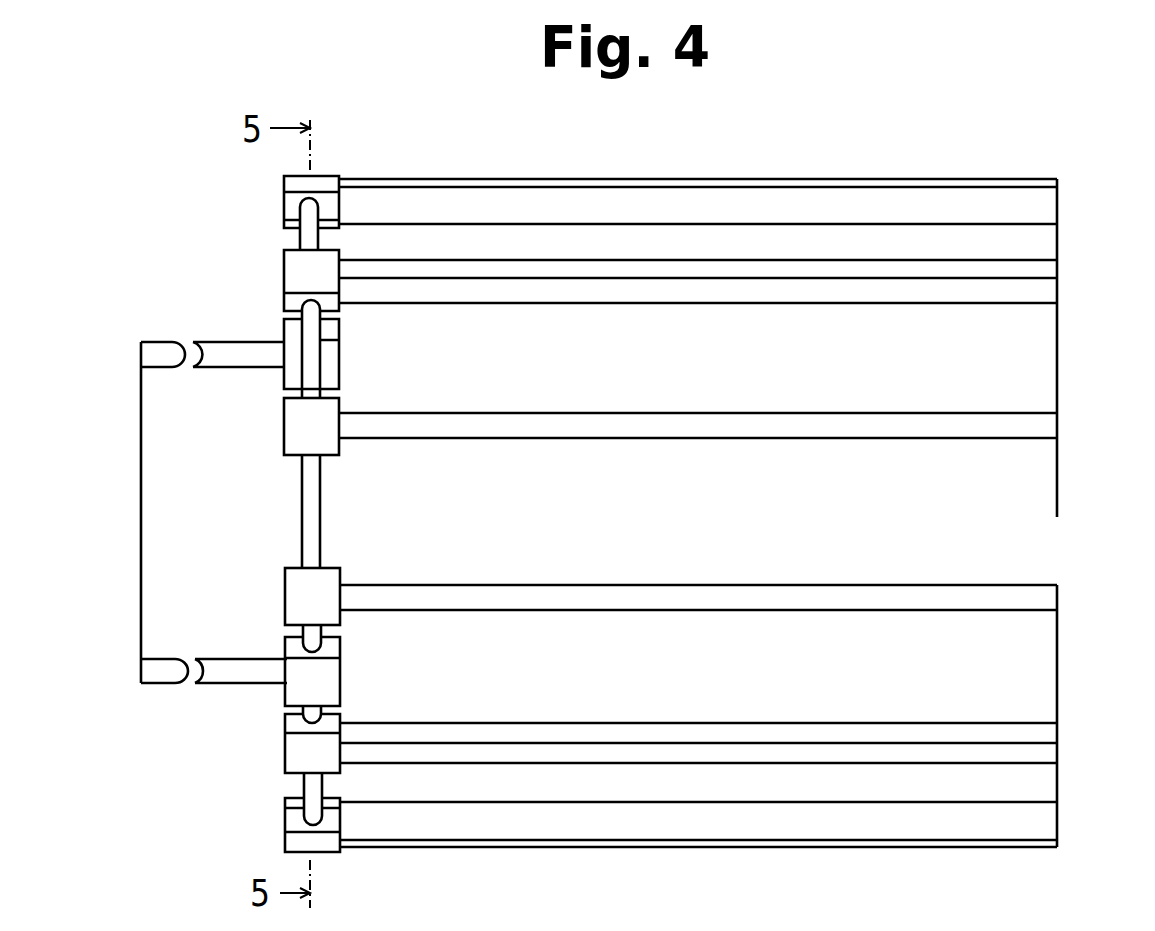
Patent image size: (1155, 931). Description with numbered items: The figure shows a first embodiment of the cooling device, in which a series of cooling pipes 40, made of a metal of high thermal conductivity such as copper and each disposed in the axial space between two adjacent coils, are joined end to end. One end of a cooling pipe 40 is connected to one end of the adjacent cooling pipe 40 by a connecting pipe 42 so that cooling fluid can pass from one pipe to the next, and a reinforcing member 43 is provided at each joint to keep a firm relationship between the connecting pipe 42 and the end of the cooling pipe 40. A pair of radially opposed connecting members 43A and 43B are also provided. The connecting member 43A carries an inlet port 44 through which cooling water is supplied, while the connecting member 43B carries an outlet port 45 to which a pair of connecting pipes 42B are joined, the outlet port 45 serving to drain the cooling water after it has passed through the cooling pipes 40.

The cooling pipe 40 is at (967, 203).
The connecting pipe 42 is at (308, 217).
The connecting pipe 42B is at (310, 718).
The reinforcing member 43 is at (283, 206).
The connecting member 43A is at (293, 330).
The connecting member 43B is at (292, 672).
The inlet port 44 is at (162, 350).
The outlet port 45 is at (156, 674).